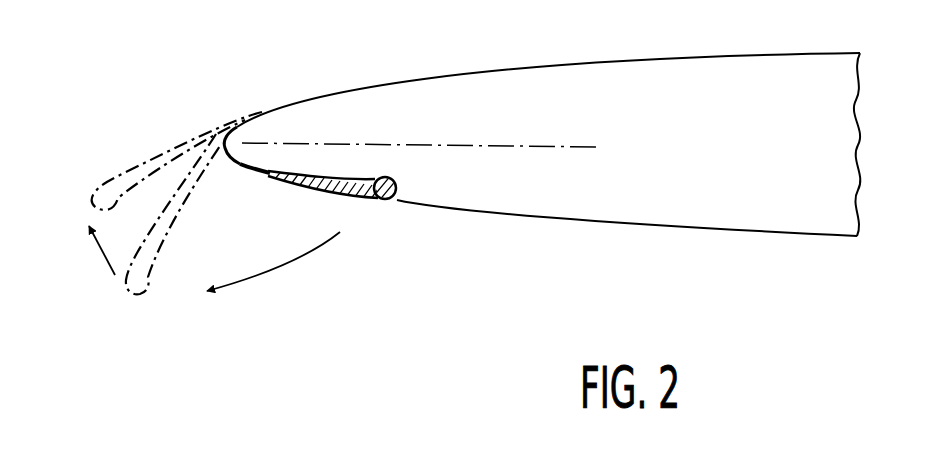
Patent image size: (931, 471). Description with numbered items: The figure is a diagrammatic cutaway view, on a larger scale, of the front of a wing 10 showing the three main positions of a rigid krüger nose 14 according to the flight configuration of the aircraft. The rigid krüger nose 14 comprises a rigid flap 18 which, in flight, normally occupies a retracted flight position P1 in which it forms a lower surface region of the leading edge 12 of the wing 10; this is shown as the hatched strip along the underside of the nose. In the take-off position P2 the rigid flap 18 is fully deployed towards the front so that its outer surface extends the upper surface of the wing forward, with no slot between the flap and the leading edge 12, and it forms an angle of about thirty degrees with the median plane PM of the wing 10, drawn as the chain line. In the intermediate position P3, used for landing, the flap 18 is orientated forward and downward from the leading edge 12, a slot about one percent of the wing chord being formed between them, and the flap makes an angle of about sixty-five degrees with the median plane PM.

The wing 10 is at (768, 161).
The leading edge 12 is at (287, 125).
The rigid krüger nose 14 is at (360, 243).
The rigid flap 18 is at (394, 200).
The retracted flight position P1 is at (316, 196).
The take-off position P2 is at (119, 174).
The intermediate position P3 is at (124, 288).
The median plane PM is at (557, 146).